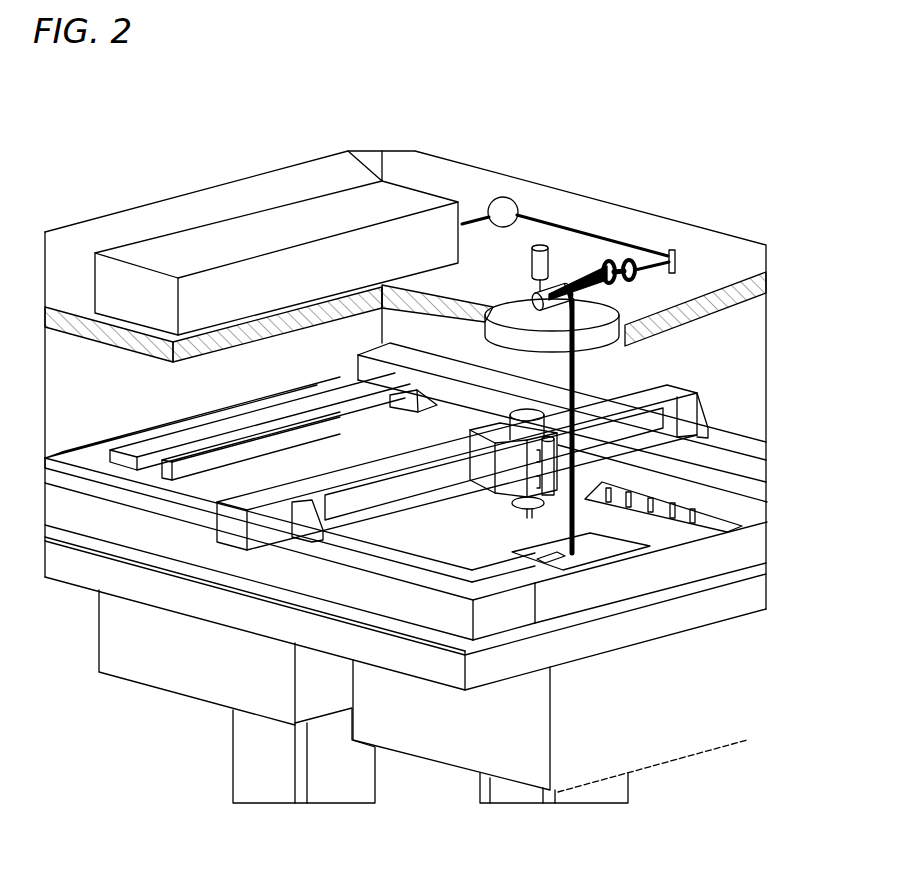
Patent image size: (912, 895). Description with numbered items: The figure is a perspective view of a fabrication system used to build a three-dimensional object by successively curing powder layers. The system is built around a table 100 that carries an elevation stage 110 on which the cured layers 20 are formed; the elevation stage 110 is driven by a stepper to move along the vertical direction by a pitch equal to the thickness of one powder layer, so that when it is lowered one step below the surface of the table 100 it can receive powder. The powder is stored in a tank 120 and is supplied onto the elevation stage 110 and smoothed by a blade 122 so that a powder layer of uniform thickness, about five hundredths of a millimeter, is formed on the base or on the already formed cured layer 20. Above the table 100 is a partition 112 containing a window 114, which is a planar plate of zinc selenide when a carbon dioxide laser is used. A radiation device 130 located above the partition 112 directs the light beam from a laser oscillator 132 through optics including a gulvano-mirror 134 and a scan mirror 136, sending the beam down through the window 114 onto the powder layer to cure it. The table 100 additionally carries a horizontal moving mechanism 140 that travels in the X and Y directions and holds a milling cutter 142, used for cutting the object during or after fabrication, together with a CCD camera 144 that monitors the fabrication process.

The cured layer 20 is at (593, 548).
The table 100 is at (623, 597).
The elevation stage 110 is at (660, 553).
The partition 112 is at (733, 263).
The window 114 is at (632, 323).
The tank 120 is at (232, 483).
The blade 122 is at (213, 458).
The radiation device 130 is at (333, 192).
The laser oscillator 132 is at (247, 238).
The gulvano-mirror 134 is at (677, 247).
The scan mirror 136 is at (573, 291).
The horizontal moving mechanism 140 is at (377, 470).
The milling cutter 142 is at (505, 473).
The CCD camera 144 is at (547, 473).